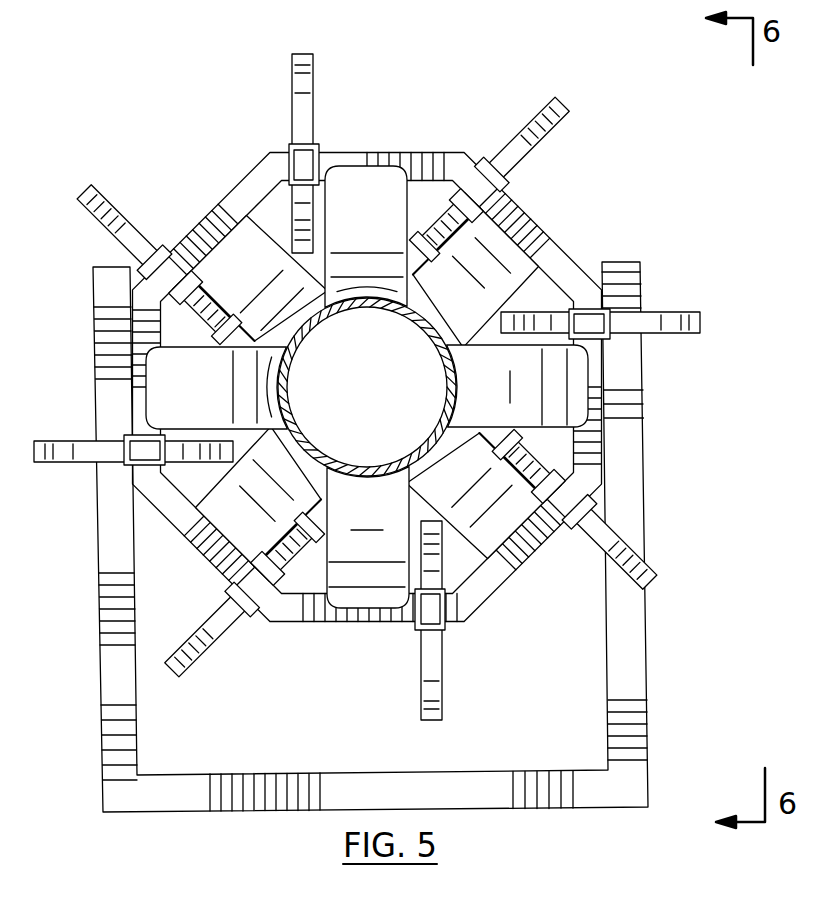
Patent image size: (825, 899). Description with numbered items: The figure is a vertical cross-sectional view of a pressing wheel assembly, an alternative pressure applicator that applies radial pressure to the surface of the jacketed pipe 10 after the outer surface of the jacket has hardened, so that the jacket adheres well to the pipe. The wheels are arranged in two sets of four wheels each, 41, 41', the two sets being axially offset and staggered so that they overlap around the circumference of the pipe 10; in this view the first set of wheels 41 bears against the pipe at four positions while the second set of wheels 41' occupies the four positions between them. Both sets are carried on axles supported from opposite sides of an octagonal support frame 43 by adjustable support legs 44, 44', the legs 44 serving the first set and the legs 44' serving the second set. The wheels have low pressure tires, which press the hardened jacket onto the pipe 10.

The cylindrical workpiece 10 is at (330, 456).
The wheel 41 is at (314, 355).
The wheel 41' is at (365, 372).
The octagonal support frame 43 is at (515, 572).
The adjustable support leg 44 is at (367, 387).
The adjustable support leg 44' is at (396, 386).